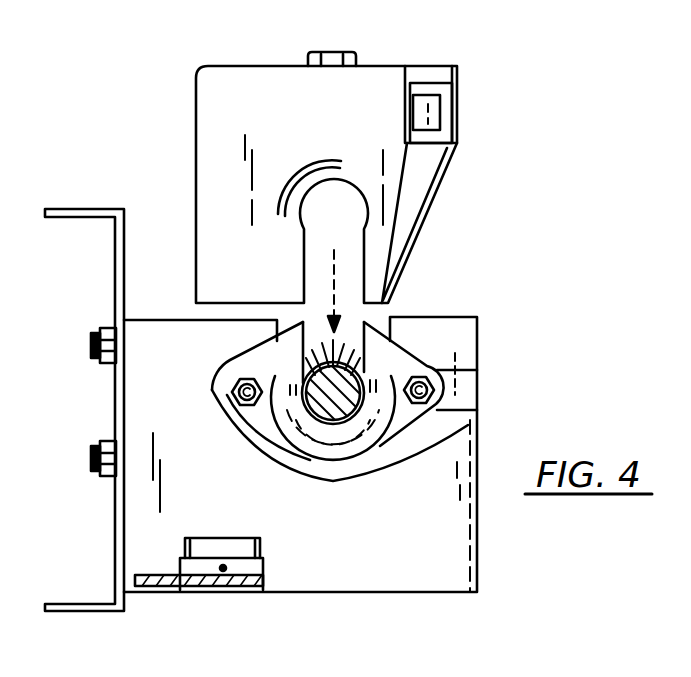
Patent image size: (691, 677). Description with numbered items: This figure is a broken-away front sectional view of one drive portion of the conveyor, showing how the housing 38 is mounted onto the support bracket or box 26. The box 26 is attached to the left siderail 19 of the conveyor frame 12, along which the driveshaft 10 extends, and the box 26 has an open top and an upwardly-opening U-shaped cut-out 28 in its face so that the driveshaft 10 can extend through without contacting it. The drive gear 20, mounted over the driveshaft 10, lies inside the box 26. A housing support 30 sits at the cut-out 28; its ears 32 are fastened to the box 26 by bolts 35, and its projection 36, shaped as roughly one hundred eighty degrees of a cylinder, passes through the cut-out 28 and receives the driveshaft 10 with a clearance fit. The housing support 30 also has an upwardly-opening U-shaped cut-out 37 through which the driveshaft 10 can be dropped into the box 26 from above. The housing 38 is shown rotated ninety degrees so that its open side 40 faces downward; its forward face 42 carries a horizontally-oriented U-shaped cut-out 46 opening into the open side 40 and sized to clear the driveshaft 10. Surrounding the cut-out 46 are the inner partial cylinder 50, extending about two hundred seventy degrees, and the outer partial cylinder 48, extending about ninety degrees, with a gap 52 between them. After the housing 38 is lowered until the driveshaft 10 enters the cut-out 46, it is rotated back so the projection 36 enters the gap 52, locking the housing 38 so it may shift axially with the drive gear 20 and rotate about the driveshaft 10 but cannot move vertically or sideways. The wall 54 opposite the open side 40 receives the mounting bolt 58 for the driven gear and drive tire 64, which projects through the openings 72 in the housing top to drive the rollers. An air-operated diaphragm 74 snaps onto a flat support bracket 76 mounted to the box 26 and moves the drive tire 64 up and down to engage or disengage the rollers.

The driveshaft 10 is at (308, 412).
The conveyor frame 12 is at (110, 253).
The left siderail 19 is at (68, 208).
The drive gear 20 is at (372, 322).
The support bracket or box 26 is at (432, 594).
The U-shaped cut-outs 28 is at (421, 318).
The housing support 30 is at (447, 356).
The ears 32 is at (240, 431).
The bolts 35 is at (231, 396).
The projection 36 is at (377, 427).
The U-shaped cut-out 37 is at (306, 322).
The housing 38 is at (393, 67).
The open side 40 is at (212, 305).
The forward face 42 is at (237, 78).
The U-shaped cut-outs 46 is at (358, 252).
The outer partial cylinder 48 is at (310, 168).
The inner partial cylinder 50 is at (350, 190).
The gap 52 is at (287, 218).
The wall 54 is at (270, 62).
The mounting bolt 58 is at (345, 52).
The drive tire 64 is at (443, 117).
The openings 72 is at (443, 86).
The air-operated diaphragm 74 is at (258, 550).
The flat support bracket 76 is at (277, 590).